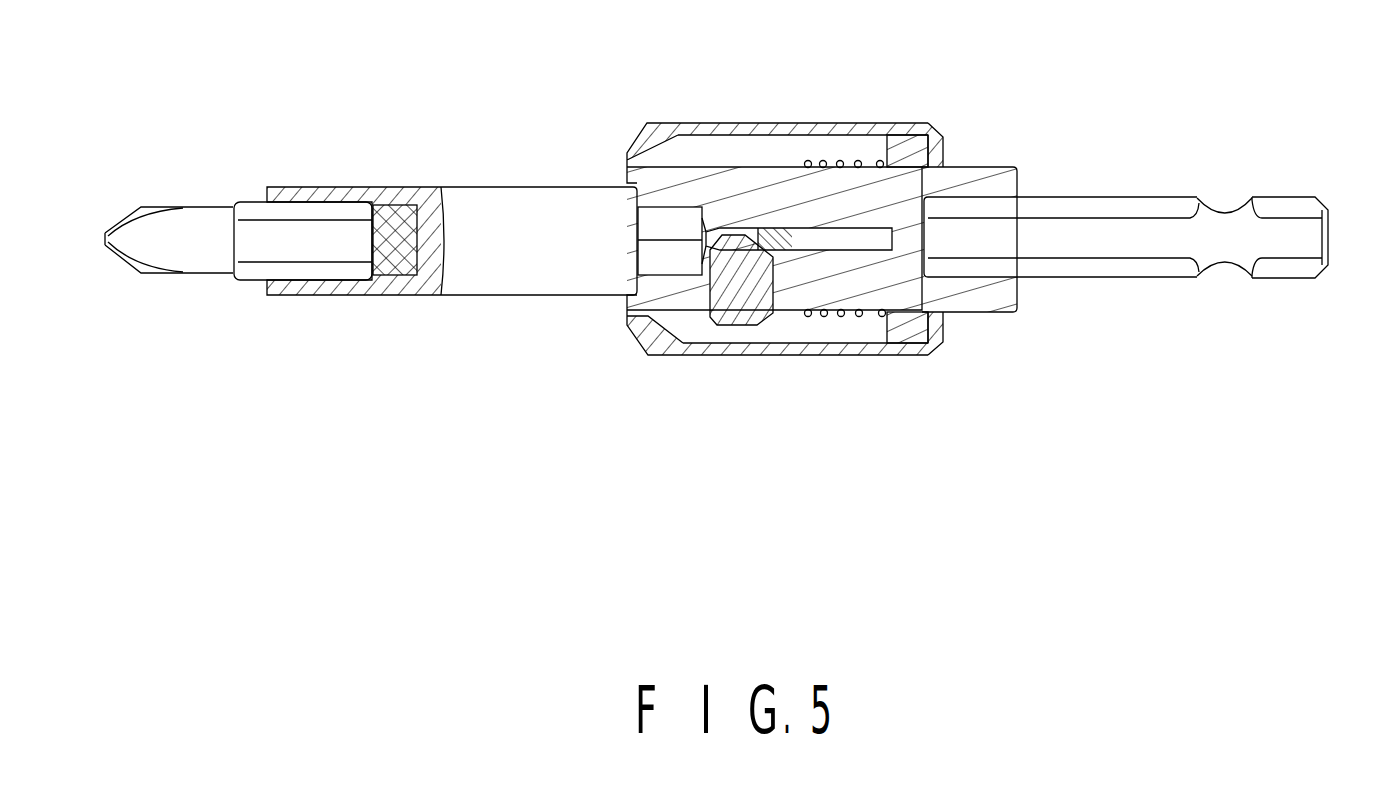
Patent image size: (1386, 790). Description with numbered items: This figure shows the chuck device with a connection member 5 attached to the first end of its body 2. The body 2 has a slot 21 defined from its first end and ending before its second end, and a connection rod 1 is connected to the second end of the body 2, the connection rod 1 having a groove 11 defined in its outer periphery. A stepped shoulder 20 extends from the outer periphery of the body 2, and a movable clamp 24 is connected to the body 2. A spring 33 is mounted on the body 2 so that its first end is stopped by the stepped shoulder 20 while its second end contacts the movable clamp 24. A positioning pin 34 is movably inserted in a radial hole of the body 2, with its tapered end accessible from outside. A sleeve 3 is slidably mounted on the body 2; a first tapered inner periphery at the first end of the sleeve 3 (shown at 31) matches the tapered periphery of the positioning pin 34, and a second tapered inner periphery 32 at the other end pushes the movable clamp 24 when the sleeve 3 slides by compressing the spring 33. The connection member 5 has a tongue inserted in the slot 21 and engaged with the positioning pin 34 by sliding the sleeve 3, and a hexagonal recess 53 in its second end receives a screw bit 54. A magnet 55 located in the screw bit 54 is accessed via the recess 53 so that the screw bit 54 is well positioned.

The connection rod 1 is at (1130, 270).
The groove 11 is at (1218, 263).
The body 2 is at (1003, 173).
The stepped shoulder 20 is at (788, 305).
The slot 21 is at (850, 238).
The movable clamp 24 is at (903, 143).
The sleeve 3 is at (677, 332).
The first end of the sleeve 31 is at (815, 140).
The second tapered inner periphery 32 is at (942, 343).
The spring 33 is at (840, 316).
The positioning pin 34 is at (738, 303).
The connection member 5 is at (490, 197).
The hexagonal recess 53 is at (372, 204).
The screw bit 54 is at (182, 226).
The magnet 55 is at (399, 267).